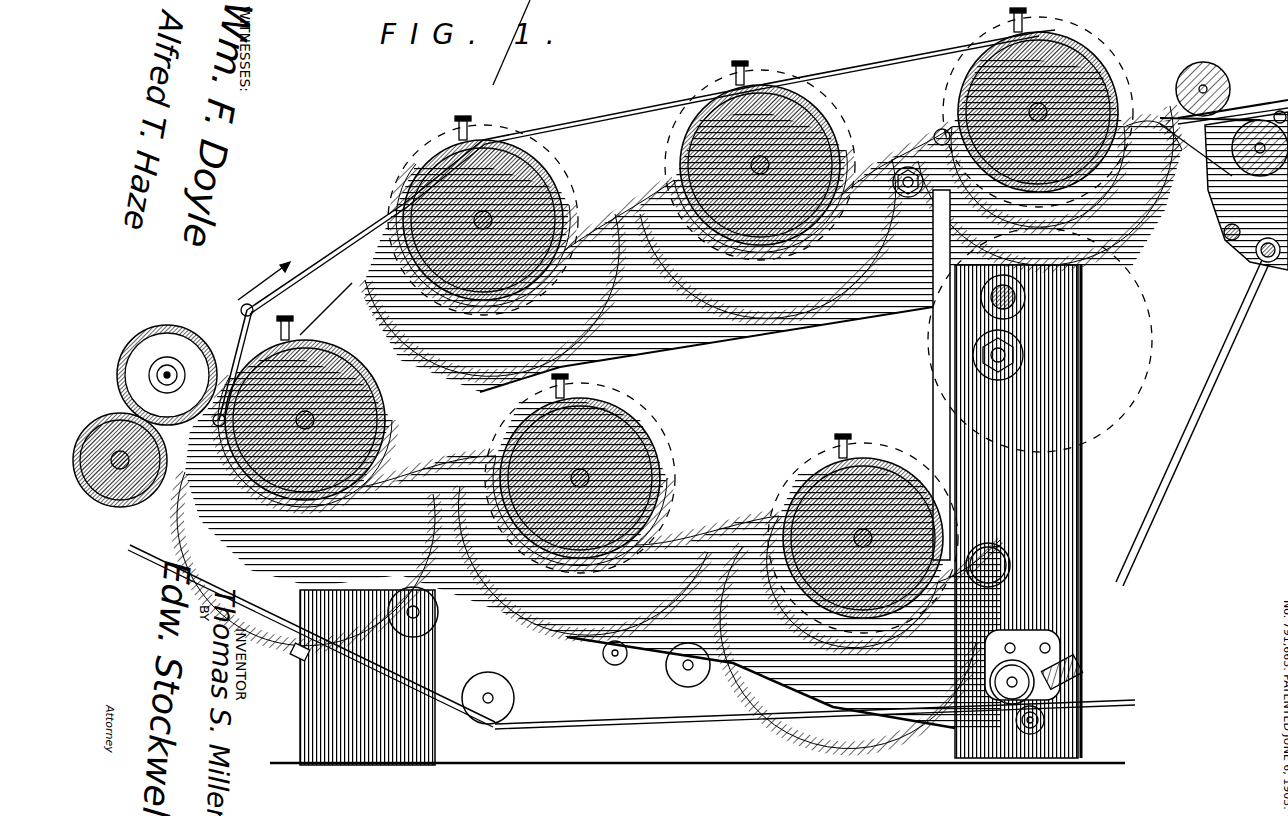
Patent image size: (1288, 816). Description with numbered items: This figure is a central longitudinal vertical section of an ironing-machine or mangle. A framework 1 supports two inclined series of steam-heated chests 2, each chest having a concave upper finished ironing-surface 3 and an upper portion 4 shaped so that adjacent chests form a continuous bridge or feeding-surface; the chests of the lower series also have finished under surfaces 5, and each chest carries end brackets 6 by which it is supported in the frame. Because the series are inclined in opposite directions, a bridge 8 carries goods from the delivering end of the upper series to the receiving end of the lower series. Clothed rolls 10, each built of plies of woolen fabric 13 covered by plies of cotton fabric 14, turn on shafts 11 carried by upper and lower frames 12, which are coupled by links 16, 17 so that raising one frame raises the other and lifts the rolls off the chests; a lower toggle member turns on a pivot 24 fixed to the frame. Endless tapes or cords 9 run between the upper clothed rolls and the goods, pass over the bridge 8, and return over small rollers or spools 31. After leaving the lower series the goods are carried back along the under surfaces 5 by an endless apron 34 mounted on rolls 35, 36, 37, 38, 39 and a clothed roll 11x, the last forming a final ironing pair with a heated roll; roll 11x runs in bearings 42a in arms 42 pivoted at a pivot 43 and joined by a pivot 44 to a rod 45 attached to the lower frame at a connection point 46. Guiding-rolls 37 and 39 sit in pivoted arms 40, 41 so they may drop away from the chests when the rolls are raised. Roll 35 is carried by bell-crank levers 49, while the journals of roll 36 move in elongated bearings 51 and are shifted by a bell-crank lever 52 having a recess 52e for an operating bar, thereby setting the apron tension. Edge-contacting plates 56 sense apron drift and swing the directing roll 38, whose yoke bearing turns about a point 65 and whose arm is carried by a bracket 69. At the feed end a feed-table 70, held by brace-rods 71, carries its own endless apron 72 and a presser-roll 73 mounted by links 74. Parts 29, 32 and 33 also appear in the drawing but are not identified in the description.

The framework 1 is at (1082, 521).
The steam-heated chests 2 is at (668, 404).
The concave upper finished ironing-surface 3 is at (618, 329).
The upper portion or continuous bridge feeding-surface 4 is at (653, 351).
The finished under surfaces 5 is at (818, 728).
The brackets 6 is at (1016, 244).
The bridge 8 is at (326, 294).
The endless tapes or cords 9 is at (651, 167).
The roll 10 is at (488, 190).
The shaft 11 is at (470, 212).
The clothed roll 11x is at (84, 523).
The frame 12 is at (700, 384).
The plies of woolen fabric 13 is at (566, 195).
The plies of cotton fabric 14 is at (528, 170).
The link 16 is at (427, 328).
The link 17 is at (938, 363).
The pivot 24 is at (1012, 300).
The bolt 29 is at (880, 152).
The small rollers or spools 31 is at (218, 337).
The hinge pin 32 is at (266, 311).
The pin 33 is at (264, 335).
The endless apron 34 is at (740, 730).
The apron-guiding roll 35 is at (988, 565).
The apron-guiding roll 36 is at (1022, 682).
The guiding-roll 37 is at (688, 665).
The guide and directing roll 38 is at (503, 697).
The guiding-roll 39 is at (415, 600).
The arm 40 is at (628, 673).
The arm 41 is at (462, 655).
The arms 42 is at (172, 475).
The bearings 42a is at (114, 448).
The pivot 43 is at (295, 636).
The pivot 44 is at (258, 635).
The link or rod 45 is at (507, 591).
The connection point 46 is at (330, 545).
The bell-crank levers 49 is at (990, 602).
The elongated bearings 51 is at (1080, 672).
The bell-crank lever 52 is at (986, 760).
The recess 52e is at (1083, 693).
The edge-contacting plates 56 is at (284, 661).
The point 65 is at (304, 675).
The bracket 69 is at (503, 745).
The feed-table 70 is at (1180, 120).
The brace-rods 71 is at (1195, 410).
The endless apron 72 is at (1246, 191).
The presser-roll 73 is at (1218, 86).
The links 74 is at (1233, 125).